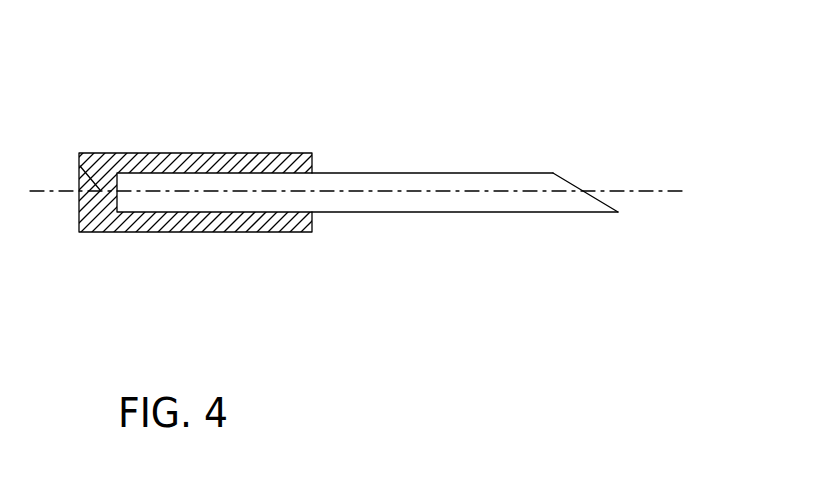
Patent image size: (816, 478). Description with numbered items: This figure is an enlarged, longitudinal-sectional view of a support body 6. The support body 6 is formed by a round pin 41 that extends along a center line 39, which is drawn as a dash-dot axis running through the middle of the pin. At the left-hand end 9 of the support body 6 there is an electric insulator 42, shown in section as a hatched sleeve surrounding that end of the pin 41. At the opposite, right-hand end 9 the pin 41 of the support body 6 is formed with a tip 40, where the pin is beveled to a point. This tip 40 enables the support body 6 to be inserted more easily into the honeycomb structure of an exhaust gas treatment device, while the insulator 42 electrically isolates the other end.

The support body 6 is at (177, 279).
The end 9 is at (297, 155).
The center line 39 is at (643, 190).
The tip 40 is at (618, 212).
The round pin 41 is at (544, 215).
The electric insulator 42 is at (80, 166).